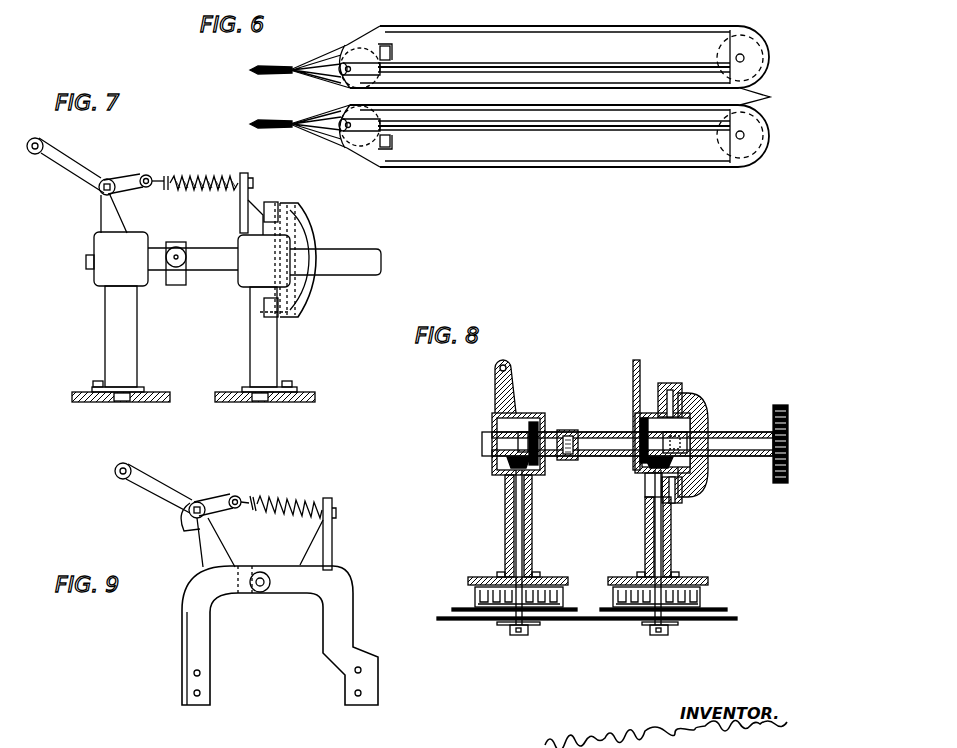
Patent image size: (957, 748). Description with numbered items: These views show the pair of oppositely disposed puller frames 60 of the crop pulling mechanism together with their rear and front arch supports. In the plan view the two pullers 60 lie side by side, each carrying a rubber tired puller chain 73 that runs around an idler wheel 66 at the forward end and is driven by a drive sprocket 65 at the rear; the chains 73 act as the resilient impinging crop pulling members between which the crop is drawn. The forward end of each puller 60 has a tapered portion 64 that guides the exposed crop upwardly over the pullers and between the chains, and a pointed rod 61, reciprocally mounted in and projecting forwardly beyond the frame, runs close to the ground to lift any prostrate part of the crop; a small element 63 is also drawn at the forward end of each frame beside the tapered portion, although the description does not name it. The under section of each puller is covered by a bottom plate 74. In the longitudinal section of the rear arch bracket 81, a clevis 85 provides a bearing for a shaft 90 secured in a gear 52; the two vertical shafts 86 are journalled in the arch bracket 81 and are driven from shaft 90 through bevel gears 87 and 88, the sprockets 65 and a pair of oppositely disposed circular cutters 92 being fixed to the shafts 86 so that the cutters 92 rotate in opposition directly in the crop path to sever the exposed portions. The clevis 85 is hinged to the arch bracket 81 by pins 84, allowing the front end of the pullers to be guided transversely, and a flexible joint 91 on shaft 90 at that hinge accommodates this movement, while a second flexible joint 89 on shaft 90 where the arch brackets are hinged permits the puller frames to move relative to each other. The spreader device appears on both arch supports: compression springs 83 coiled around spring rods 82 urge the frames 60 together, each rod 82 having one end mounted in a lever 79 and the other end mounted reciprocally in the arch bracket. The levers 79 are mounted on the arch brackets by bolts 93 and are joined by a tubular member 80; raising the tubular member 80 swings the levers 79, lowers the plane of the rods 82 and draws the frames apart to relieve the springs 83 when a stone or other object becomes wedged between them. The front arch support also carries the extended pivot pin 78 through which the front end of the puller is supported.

In FIG. 8, the gear 52 is at (782, 405).
In FIG. 6, the puller frame 60 is at (572, 46).
In FIG. 7, the puller frame 60 is at (84, 402).
In FIG. 8, the puller frame 60 is at (482, 582).
In FIG. 6, the pointed rod 61 is at (268, 120).
In FIG. 6, the key block 63 is at (391, 50).
In FIG. 6, the tapered portion 64 is at (337, 46).
In FIG. 6, the drive sprocket 65 is at (752, 50).
In FIG. 8, the drive sprocket 65 is at (477, 600).
In FIG. 6, the idler wheel 66 is at (368, 142).
In FIG. 6, the puller chain 73 is at (769, 98).
In FIG. 8, the bottom plate 74 is at (458, 608).
In FIG. 9, the pivot pin 78 is at (265, 591).
In FIG. 7, the lever 79 is at (64, 160).
In FIG. 9, the lever 79 is at (153, 491).
In FIG. 7, the tubular member 80 is at (38, 156).
In FIG. 9, the tubular member 80 is at (114, 470).
In FIG. 7, the arch bracket 81 is at (252, 344).
In FIG. 8, the arch bracket 81 is at (507, 526).
In FIG. 7, the spring rod 82 is at (151, 176).
In FIG. 9, the spring rod 82 is at (244, 498).
In FIG. 7, the compression spring 83 is at (208, 182).
In FIG. 9, the compression spring 83 is at (303, 498).
In FIG. 7, the pin 84 is at (293, 208).
In FIG. 8, the pin 84 is at (677, 384).
In FIG. 7, the clevis 85 is at (372, 263).
In FIG. 8, the clevis 85 is at (767, 458).
In FIG. 8, the vertical shaft 86 is at (518, 497).
In FIG. 8, the bevel gear 87 is at (505, 460).
In FIG. 8, the bevel gear 88 is at (518, 438).
In FIG. 8, the flexible joint 89 is at (564, 430).
In FIG. 8, the shaft 90 is at (731, 440).
In FIG. 8, the flexible joint 91 is at (690, 460).
In FIG. 8, the circular cutter 92 is at (620, 619).
In FIG. 7, the bolt 93 is at (101, 191).
In FIG. 9, the bolt 93 is at (193, 514).